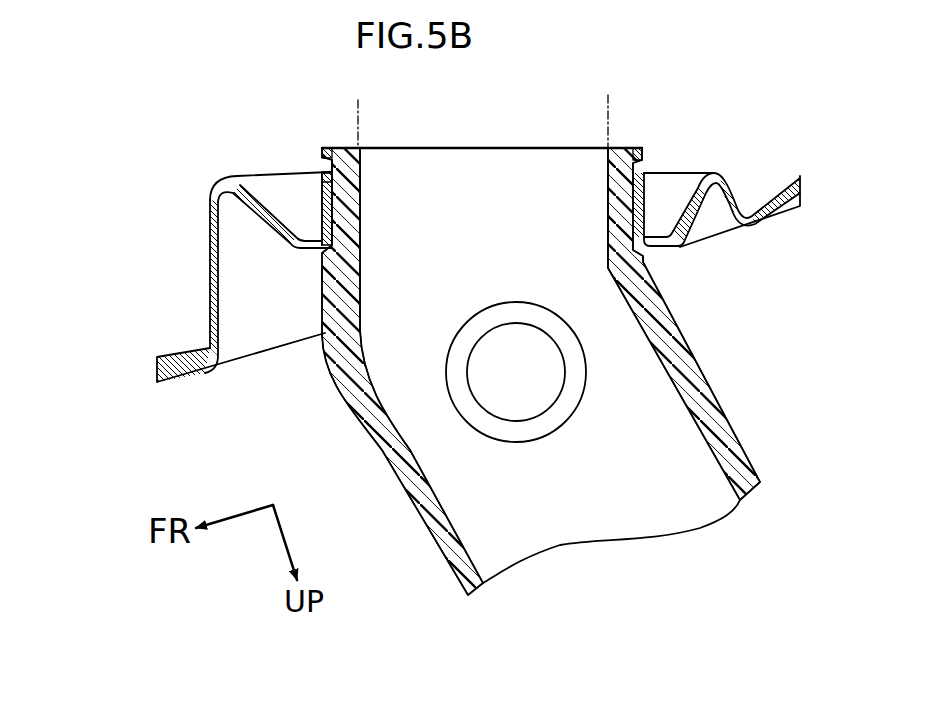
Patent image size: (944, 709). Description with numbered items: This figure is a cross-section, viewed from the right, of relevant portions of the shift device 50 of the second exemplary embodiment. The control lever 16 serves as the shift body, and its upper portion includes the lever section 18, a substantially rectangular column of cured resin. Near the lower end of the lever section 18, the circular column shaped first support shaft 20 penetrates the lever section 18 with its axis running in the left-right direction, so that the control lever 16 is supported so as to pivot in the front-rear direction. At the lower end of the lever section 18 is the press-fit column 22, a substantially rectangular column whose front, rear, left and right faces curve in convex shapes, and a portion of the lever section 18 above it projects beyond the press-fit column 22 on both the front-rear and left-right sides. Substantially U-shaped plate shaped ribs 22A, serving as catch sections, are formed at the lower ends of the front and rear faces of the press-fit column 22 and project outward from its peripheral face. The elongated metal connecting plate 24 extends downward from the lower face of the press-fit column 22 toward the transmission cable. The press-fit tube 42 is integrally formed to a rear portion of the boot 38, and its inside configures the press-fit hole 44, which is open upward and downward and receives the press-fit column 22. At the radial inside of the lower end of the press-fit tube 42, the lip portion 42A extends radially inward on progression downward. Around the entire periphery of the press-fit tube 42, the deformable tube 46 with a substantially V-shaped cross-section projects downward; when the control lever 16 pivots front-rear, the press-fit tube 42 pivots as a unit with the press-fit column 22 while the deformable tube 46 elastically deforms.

The control lever 16 is at (545, 371).
The lever section 18 is at (388, 453).
The first support shaft 20 is at (509, 322).
The press-fit column 22 is at (323, 194).
The rib 22A is at (326, 146).
The connecting plate 24 is at (610, 112).
The boot 38 is at (181, 388).
The press-fit tube 42 is at (648, 197).
The lip portion 42A is at (325, 172).
The press-fit hole 44 is at (606, 206).
The deformable tube 46 is at (208, 247).
The shift device 50 is at (226, 291).